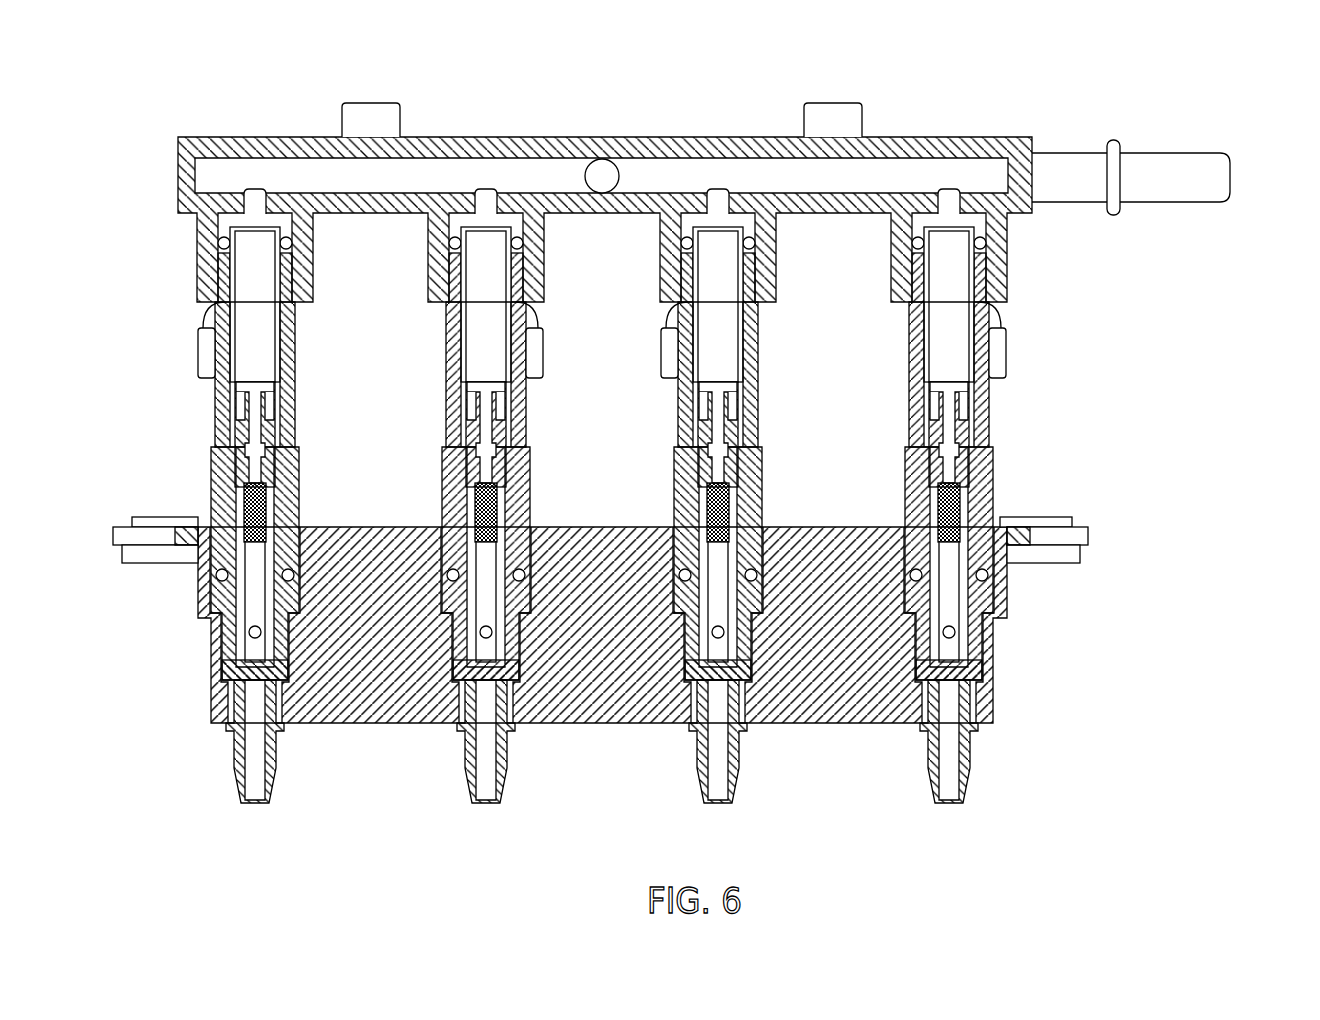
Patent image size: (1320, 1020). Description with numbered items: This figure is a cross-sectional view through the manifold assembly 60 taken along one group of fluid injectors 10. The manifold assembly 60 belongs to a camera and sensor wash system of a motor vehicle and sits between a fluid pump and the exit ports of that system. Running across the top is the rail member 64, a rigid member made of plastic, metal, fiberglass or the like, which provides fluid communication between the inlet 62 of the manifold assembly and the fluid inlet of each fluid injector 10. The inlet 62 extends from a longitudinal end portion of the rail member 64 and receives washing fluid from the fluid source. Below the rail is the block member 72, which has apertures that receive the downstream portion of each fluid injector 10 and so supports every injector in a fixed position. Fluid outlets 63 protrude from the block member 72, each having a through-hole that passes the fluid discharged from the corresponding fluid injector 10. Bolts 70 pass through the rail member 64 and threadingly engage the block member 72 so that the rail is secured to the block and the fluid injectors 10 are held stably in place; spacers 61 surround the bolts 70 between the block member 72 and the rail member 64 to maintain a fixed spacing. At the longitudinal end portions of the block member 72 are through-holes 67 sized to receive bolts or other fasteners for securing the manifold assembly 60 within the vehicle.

The fluid injector 10 is at (603, 538).
The manifold assembly 60 is at (1232, 73).
The spacer 61 is at (345, 257).
The inlet 62 is at (1156, 152).
The fluid outlet 63 is at (254, 803).
The rail member 64 is at (598, 158).
The through-hole 67 is at (143, 516).
The bolt 70 is at (372, 103).
The block member 72 is at (365, 725).